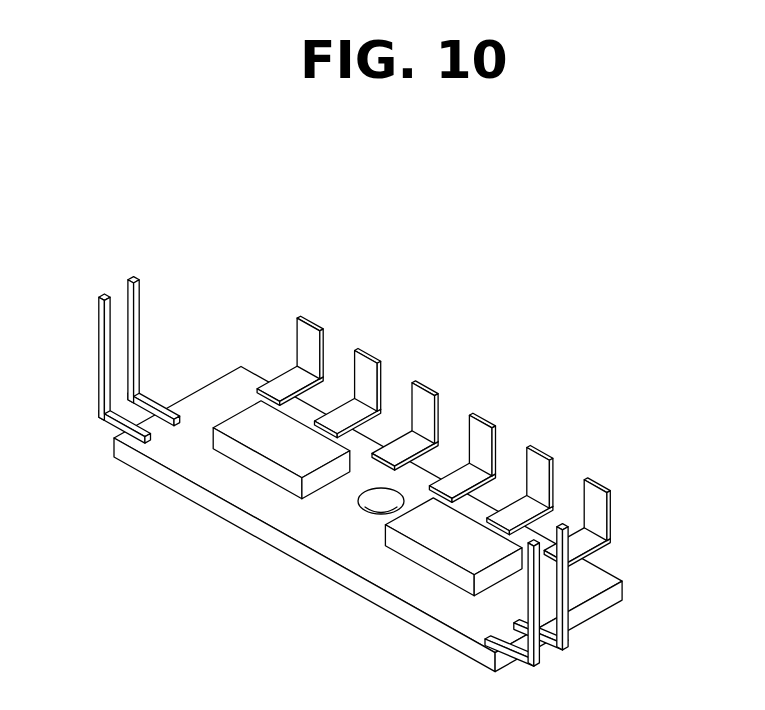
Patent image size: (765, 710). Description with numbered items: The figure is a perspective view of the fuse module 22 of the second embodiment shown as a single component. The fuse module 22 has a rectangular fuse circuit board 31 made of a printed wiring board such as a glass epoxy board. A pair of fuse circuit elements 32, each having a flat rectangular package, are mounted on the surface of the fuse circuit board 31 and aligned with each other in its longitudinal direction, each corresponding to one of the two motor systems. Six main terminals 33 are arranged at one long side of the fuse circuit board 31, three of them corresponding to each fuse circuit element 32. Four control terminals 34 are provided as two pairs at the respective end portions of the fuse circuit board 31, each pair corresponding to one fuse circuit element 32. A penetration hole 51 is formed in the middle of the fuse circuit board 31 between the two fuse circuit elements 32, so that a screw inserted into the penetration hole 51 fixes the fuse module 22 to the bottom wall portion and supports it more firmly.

The fuse module 22 is at (198, 538).
The fuse circuit board 31 is at (333, 532).
The fuse circuit elements 32 is at (275, 443).
The main terminals 33 is at (423, 383).
The control terminals 34 is at (101, 297).
The penetration hole 51 is at (388, 497).